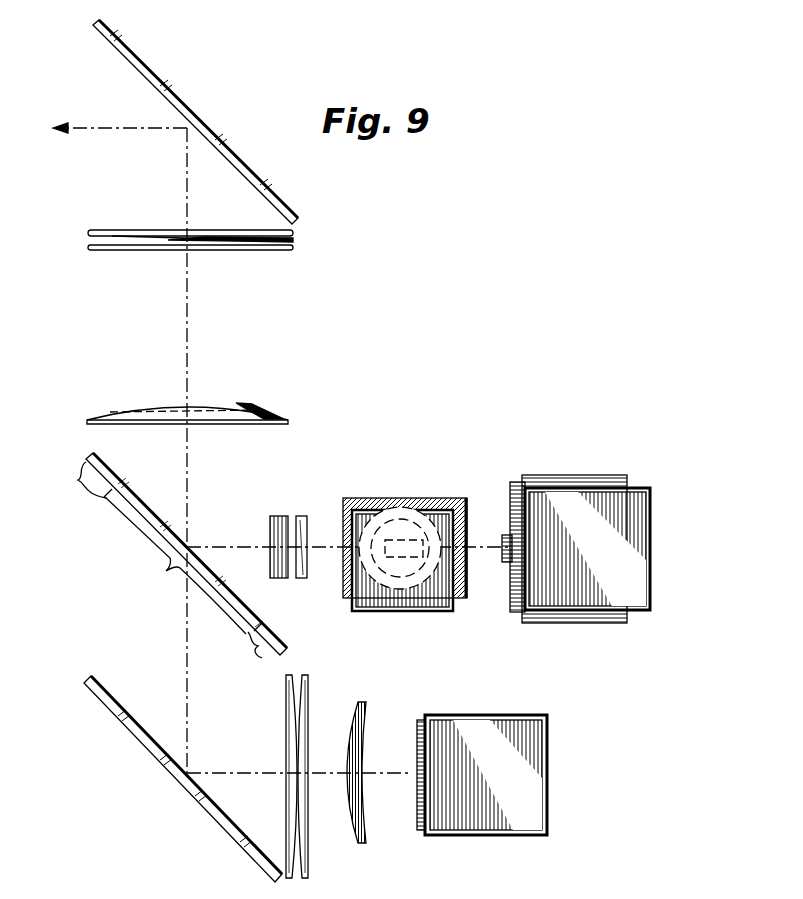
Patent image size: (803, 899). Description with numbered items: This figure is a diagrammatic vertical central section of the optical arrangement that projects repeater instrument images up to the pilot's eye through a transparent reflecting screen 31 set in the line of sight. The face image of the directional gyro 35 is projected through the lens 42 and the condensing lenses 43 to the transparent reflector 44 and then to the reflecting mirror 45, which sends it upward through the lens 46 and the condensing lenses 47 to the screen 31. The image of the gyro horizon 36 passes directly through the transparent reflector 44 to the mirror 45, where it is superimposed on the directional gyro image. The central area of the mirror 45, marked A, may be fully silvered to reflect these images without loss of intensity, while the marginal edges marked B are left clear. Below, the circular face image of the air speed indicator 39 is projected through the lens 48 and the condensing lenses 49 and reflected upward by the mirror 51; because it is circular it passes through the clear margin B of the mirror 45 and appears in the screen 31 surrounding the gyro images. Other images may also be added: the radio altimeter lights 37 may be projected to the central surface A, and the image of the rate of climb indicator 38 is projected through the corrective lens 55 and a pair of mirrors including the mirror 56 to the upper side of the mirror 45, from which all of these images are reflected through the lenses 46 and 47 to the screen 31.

The transparent reflecting screen 31 is at (135, 58).
The condensing lenses 47 is at (88, 247).
The lens 46 is at (90, 414).
The reflecting mirror 45 is at (143, 500).
The mirror 56 is at (270, 528).
The corrective lens 55 is at (306, 516).
The transparent reflector 44 is at (446, 473).
The directional gyro 35 is at (384, 540).
The lens 42 is at (399, 582).
The condensing lenses 43 is at (421, 588).
The gyro horizon 36 is at (511, 503).
The radio altimeter lights 37 is at (506, 563).
The rate of climb indicator 38 is at (590, 500).
The mirror 51 is at (164, 722).
The condensing lenses 49 is at (290, 676).
The lens 48 is at (365, 708).
The air speed indicator 39 is at (536, 788).